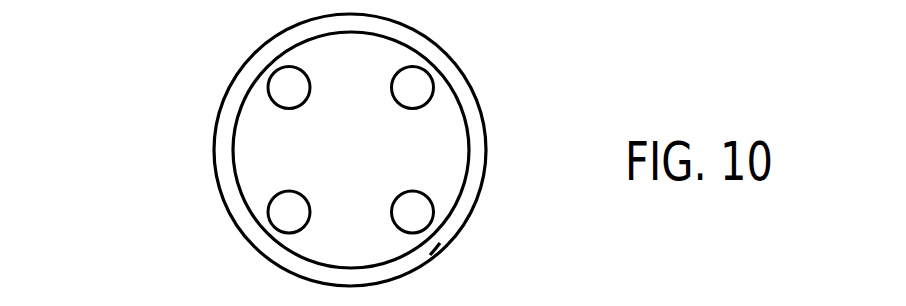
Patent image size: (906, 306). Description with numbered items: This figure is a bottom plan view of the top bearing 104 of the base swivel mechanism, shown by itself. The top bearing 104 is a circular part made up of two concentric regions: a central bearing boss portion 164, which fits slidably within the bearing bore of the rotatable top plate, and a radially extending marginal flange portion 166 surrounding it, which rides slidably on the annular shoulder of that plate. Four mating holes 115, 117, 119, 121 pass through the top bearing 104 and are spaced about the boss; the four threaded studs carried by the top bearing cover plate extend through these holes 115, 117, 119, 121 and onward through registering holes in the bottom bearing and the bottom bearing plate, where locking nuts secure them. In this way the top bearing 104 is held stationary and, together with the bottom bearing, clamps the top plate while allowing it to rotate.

The top bearing 104 is at (206, 88).
The hole 115 is at (306, 87).
The hole 117 is at (428, 80).
The hole 119 is at (284, 193).
The hole 121 is at (420, 196).
The bearing boss portion 164 is at (433, 117).
The marginal flange portion 166 is at (440, 243).